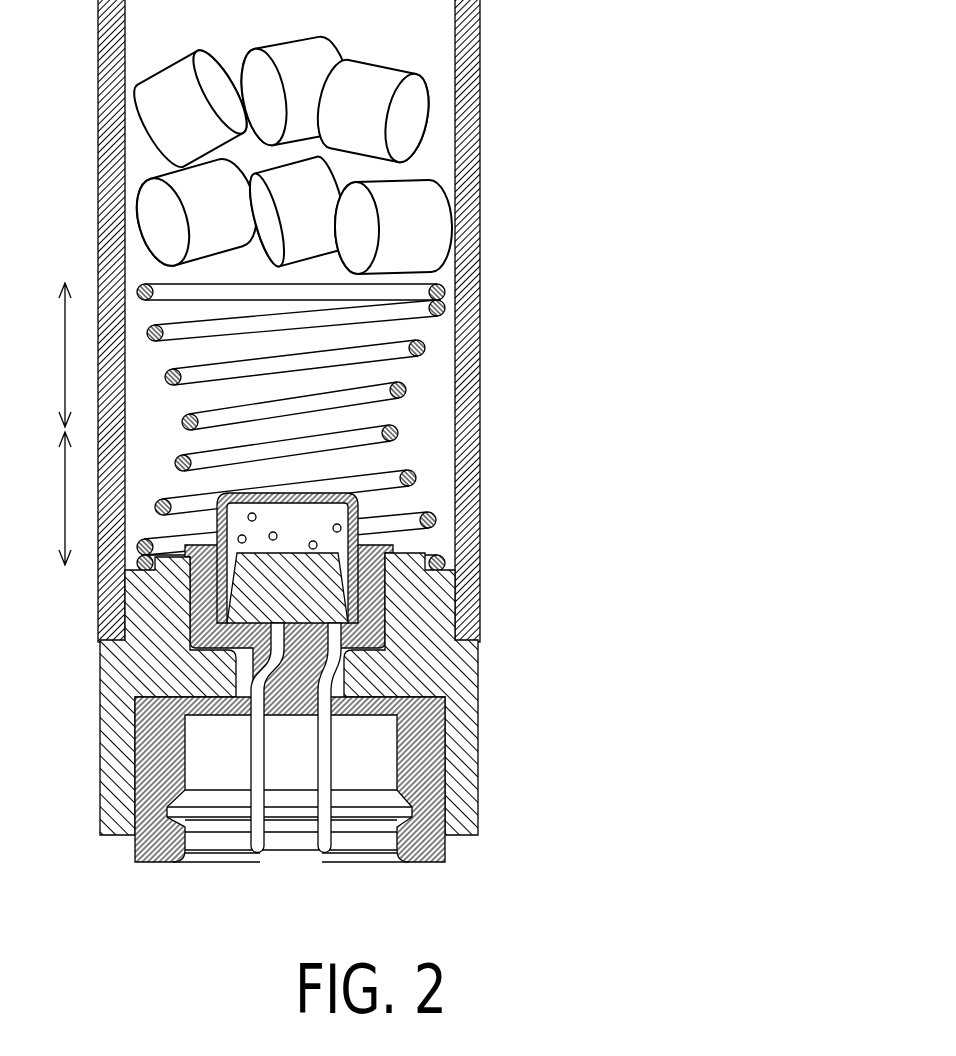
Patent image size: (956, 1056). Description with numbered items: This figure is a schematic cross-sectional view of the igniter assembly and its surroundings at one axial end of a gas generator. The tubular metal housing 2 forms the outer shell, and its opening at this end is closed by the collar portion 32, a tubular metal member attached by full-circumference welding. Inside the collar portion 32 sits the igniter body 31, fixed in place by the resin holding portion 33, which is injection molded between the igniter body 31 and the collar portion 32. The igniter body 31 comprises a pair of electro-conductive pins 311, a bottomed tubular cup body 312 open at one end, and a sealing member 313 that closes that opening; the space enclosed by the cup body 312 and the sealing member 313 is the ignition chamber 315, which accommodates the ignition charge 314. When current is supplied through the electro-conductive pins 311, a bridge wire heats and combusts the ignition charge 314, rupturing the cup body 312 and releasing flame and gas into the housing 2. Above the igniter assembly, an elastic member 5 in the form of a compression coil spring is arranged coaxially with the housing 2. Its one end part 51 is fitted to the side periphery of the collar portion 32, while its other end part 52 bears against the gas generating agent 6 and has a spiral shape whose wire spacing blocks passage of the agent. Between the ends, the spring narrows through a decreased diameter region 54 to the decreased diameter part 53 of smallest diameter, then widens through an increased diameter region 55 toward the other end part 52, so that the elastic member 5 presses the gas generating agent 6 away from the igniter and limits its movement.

The housing 2 is at (465, 250).
The gas generating agent 6 is at (410, 119).
The elastic member 5 is at (425, 422).
The one end part 51 is at (447, 563).
The other end part 52 is at (410, 283).
The decreased diameter part 53 is at (185, 436).
The decreased diameter region 54 is at (47, 498).
The increased diameter region 55 is at (47, 355).
The igniter body 31 is at (415, 691).
The electro-conductive pins 311 is at (323, 670).
The cup body 312 is at (360, 562).
The sealing member 313 is at (363, 582).
The ignition charge 314 is at (293, 590).
The ignition chamber 315 is at (323, 531).
The collar portion 32 is at (468, 758).
The holding portion 33 is at (420, 840).